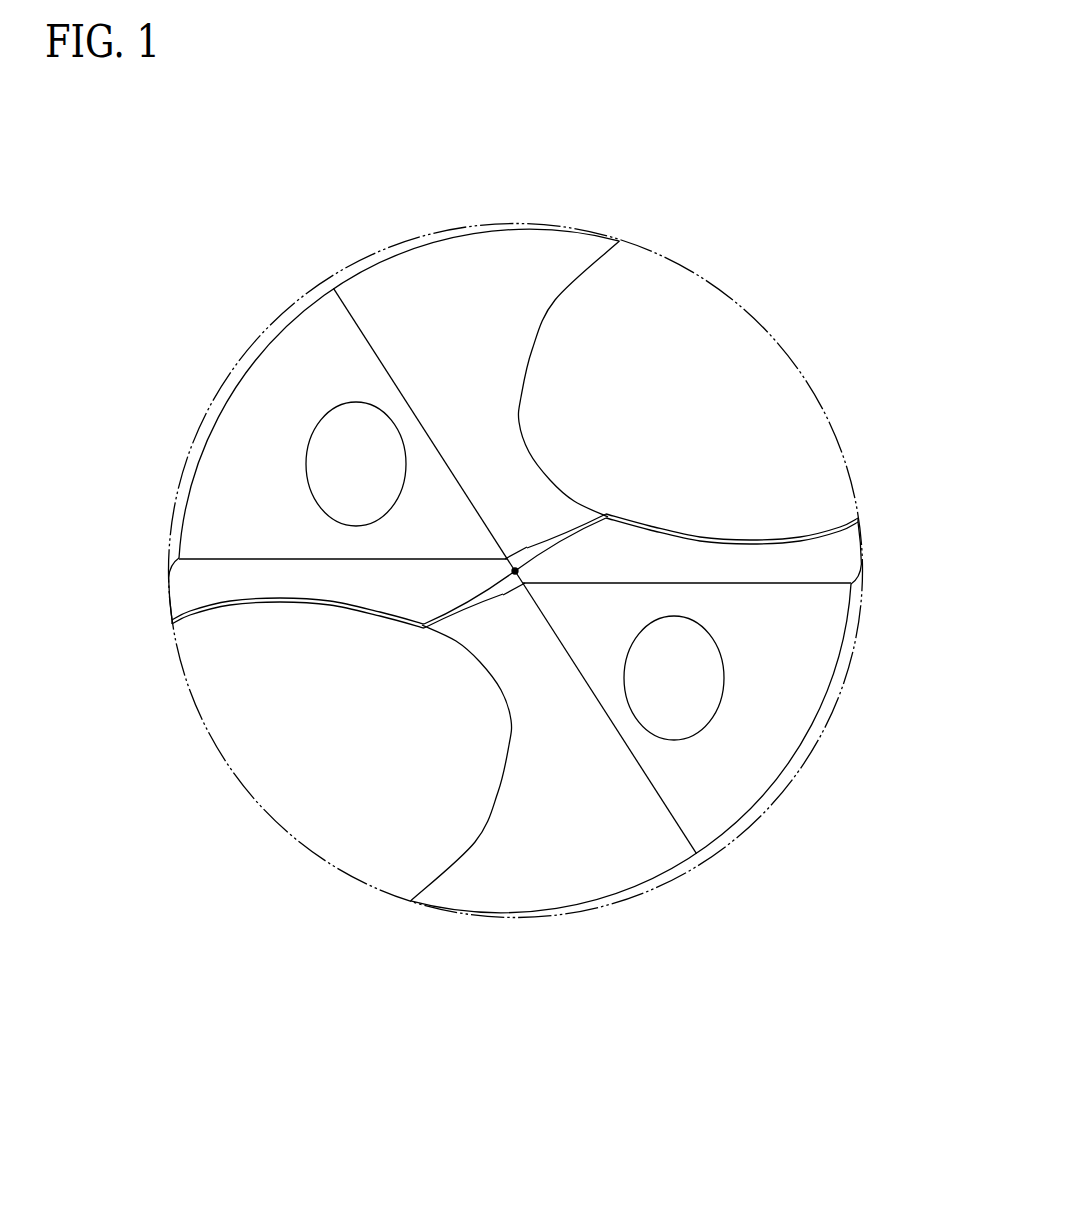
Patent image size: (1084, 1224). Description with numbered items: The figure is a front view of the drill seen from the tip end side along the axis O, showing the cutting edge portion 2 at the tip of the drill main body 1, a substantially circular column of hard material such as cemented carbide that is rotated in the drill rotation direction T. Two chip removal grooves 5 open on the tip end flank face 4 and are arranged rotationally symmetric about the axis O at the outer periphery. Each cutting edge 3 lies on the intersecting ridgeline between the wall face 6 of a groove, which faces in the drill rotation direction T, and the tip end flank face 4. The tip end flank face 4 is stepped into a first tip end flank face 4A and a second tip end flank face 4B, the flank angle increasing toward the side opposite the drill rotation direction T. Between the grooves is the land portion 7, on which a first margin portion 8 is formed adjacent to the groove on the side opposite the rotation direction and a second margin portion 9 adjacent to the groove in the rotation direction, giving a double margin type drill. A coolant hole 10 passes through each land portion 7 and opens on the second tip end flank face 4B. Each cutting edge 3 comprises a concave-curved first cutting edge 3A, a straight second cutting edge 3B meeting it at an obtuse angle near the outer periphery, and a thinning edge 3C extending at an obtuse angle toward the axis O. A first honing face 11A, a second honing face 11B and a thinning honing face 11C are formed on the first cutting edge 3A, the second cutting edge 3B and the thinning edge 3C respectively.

The drill main body 1 is at (711, 177).
The cutting edge portion 2 is at (425, 165).
The cutting edge 3 is at (514, 574).
The first cutting edge 3A is at (790, 538).
The second cutting edge 3B is at (862, 522).
The thinning edge 3C is at (560, 537).
The tip end flank face 4 is at (516, 574).
The first tip end flank face 4A is at (710, 562).
The second tip end flank face 4B is at (275, 517).
The chip removal groove 5 is at (752, 384).
The wall face 6 is at (750, 524).
The land portion 7 is at (223, 410).
The margin portion 8 is at (168, 600).
The margin portion 9 is at (615, 238).
The coolant hole 10 is at (312, 480).
The first honing face 11A is at (655, 537).
The second honing face 11B is at (864, 530).
The thinning honing face 11C is at (520, 552).
The axis O is at (520, 571).
The drill rotation direction T is at (932, 812).